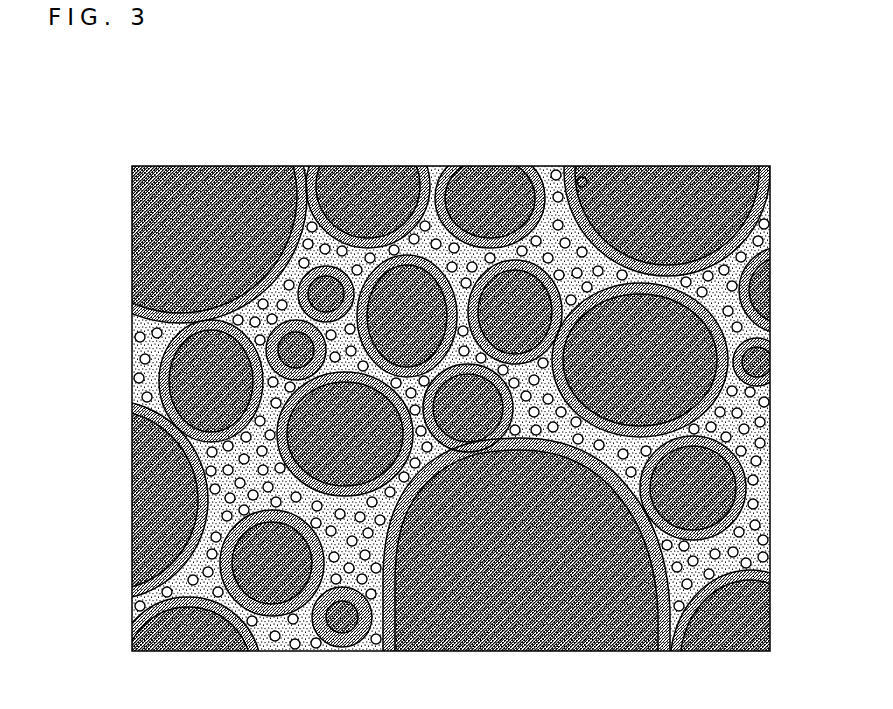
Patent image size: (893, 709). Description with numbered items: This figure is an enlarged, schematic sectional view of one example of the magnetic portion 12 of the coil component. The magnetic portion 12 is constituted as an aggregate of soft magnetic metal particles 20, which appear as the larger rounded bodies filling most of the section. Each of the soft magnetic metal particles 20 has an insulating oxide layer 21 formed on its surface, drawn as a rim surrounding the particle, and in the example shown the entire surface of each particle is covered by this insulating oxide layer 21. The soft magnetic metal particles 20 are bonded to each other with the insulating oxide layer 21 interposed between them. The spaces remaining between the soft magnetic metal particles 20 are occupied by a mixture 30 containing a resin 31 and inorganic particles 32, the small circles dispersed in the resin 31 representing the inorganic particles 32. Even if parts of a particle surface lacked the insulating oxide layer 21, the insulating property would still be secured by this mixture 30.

The magnetic portion 12 is at (157, 120).
The soft magnetic metal particles 20 is at (232, 185).
The insulating oxide layer 21 is at (304, 188).
The mixture 30 is at (517, 96).
The resin 31 is at (588, 176).
The inorganic particles 32 is at (550, 173).